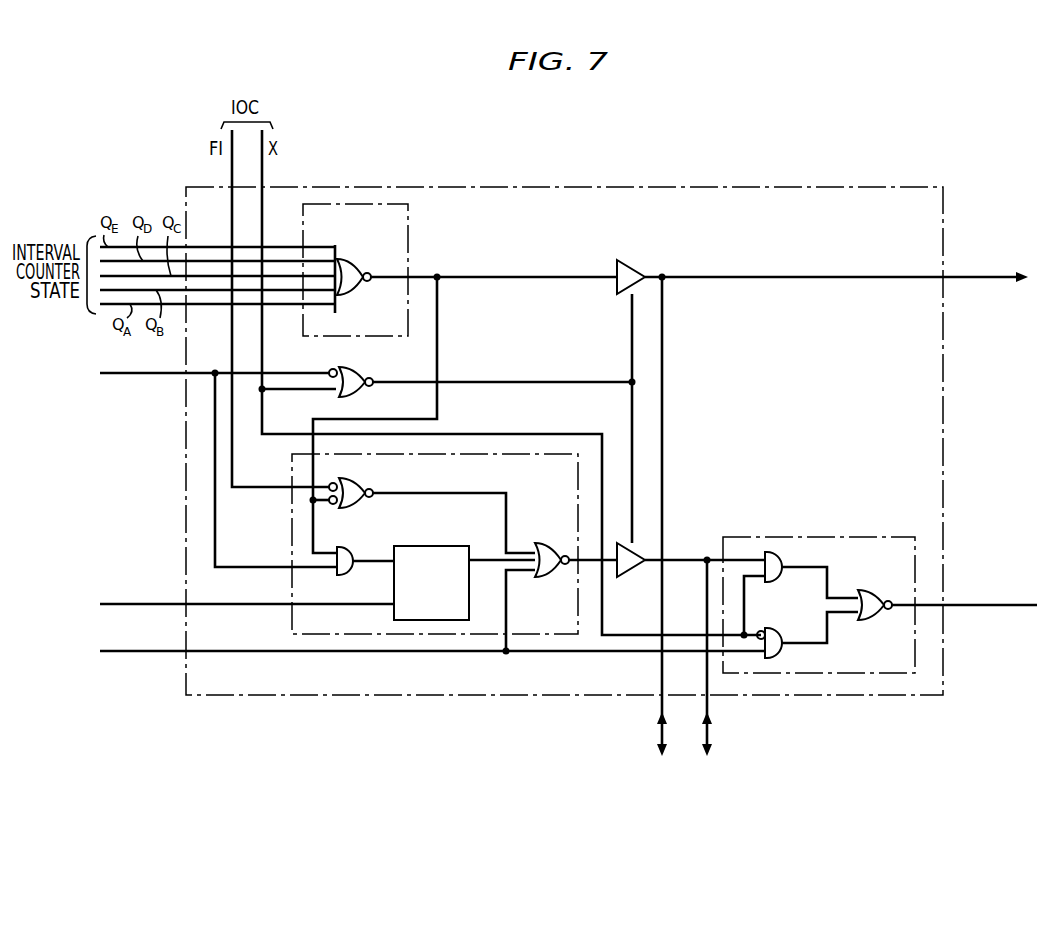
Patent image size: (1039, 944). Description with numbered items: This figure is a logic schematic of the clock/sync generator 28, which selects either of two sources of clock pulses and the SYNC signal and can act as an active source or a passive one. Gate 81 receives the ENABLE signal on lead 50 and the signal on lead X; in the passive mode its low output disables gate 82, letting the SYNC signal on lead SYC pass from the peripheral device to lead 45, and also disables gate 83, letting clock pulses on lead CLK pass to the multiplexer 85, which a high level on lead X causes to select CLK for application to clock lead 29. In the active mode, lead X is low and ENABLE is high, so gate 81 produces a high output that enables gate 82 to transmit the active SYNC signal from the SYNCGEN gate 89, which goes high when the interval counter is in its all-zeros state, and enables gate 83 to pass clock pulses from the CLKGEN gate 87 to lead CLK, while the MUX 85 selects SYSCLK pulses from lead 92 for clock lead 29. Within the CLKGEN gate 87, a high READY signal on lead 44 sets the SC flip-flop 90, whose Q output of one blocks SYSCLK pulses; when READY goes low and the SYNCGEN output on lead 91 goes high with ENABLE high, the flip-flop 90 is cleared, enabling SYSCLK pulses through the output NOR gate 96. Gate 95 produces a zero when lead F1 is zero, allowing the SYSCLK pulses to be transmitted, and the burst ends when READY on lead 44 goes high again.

The clock/sync generator 28 is at (759, 239).
The SYNCGEN gate 89 is at (379, 254).
The lead 91 is at (466, 275).
The gate 82 is at (633, 250).
The SYNC lead 45 is at (1002, 282).
The gate 81 is at (350, 355).
The ENABLE lead 50 is at (160, 376).
The gate 95 is at (350, 465).
The CLKGEN gate 87 is at (557, 503).
The SC flip-flop 90 is at (431, 545).
The output NOR gate 96 is at (540, 569).
The gate 83 is at (628, 573).
The multiplexer 85 is at (762, 537).
The clock lead 29 is at (975, 607).
The READY lead 44 is at (220, 606).
The SYSCLK lead 92 is at (226, 652).